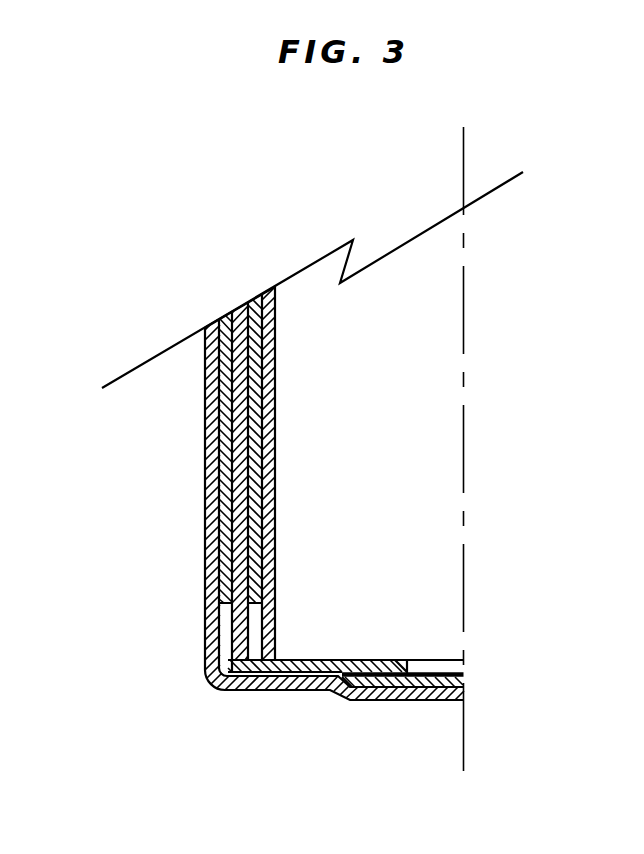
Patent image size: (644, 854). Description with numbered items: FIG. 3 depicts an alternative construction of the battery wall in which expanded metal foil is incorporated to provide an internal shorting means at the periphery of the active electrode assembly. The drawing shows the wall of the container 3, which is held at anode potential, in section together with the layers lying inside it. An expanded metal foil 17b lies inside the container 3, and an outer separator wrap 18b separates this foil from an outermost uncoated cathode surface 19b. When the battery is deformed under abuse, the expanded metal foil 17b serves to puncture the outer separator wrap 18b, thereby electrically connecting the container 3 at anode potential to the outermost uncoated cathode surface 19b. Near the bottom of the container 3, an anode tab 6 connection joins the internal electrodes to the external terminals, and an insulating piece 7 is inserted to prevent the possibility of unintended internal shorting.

The container 3 is at (271, 700).
The anode tab 6 is at (435, 666).
The insulating piece 7 is at (360, 650).
The expanded metal foil 17b is at (214, 588).
The outer separator wrap 18b is at (229, 537).
The outermost uncoated cathode surface 19b is at (228, 471).